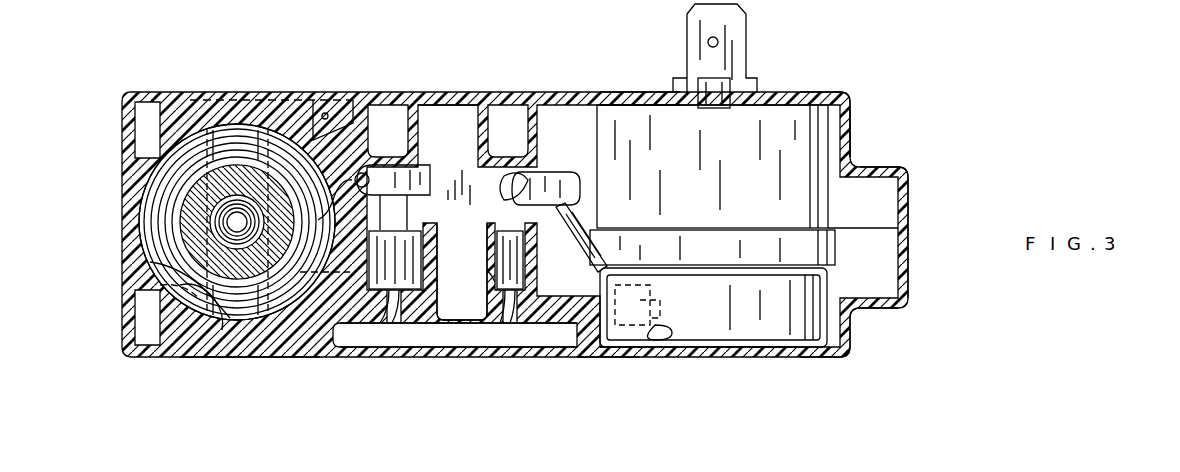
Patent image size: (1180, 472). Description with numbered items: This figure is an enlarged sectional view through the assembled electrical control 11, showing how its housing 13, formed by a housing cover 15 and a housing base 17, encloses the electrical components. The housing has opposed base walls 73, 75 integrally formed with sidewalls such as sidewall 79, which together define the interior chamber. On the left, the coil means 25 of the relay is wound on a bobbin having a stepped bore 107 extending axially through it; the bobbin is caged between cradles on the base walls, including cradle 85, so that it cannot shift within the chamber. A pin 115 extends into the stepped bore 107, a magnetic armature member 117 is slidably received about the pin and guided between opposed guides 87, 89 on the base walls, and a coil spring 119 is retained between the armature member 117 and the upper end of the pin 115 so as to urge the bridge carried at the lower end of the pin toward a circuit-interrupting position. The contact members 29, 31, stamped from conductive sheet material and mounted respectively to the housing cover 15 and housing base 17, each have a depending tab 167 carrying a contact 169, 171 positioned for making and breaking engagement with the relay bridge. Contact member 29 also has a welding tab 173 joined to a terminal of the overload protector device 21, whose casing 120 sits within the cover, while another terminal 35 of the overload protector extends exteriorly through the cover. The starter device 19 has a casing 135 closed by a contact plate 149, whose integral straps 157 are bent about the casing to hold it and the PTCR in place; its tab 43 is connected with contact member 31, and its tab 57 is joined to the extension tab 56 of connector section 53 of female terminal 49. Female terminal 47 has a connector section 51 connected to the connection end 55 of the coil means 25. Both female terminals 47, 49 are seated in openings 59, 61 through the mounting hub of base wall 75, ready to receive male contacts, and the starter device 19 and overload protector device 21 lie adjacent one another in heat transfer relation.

The electrical control 11 is at (910, 98).
The housing 13 is at (934, 148).
The housing cover 15 is at (909, 173).
The housing base 17 is at (889, 307).
The solid state starter device 19 is at (685, 293).
The overload protector device 21 is at (685, 196).
The coil means 25 is at (150, 190).
The contact member 29 is at (467, 103).
The contact member 31 is at (566, 302).
The terminal 35 is at (740, 31).
The tab 43 is at (665, 341).
The female terminal 47 is at (392, 302).
The female terminal 49 is at (512, 302).
The electrical connector section 51 is at (378, 168).
The electrical connector section 53 is at (500, 166).
The connection end 55 is at (352, 181).
The extension tab 56 is at (545, 170).
The tab 57 is at (578, 242).
The opening 59 is at (440, 262).
The opening 61 is at (488, 278).
The base wall 73 is at (636, 95).
The base wall 75 is at (607, 351).
The sidewall 79 is at (852, 140).
The cradle 85 is at (180, 285).
The guide 87 is at (178, 165).
The guide 89 is at (150, 274).
The stepped bore 107 is at (150, 262).
The pin 115 is at (218, 237).
The armature member 117 is at (205, 210).
The coil spring 119 is at (212, 223).
The casing 120 is at (838, 104).
The casing 135 is at (748, 346).
The contact plate 149 is at (722, 271).
The straps 157 is at (851, 337).
The depending tab 167 is at (335, 113).
The contact 169 is at (245, 100).
The contact 171 is at (263, 352).
The welding tab 173 is at (745, 90).